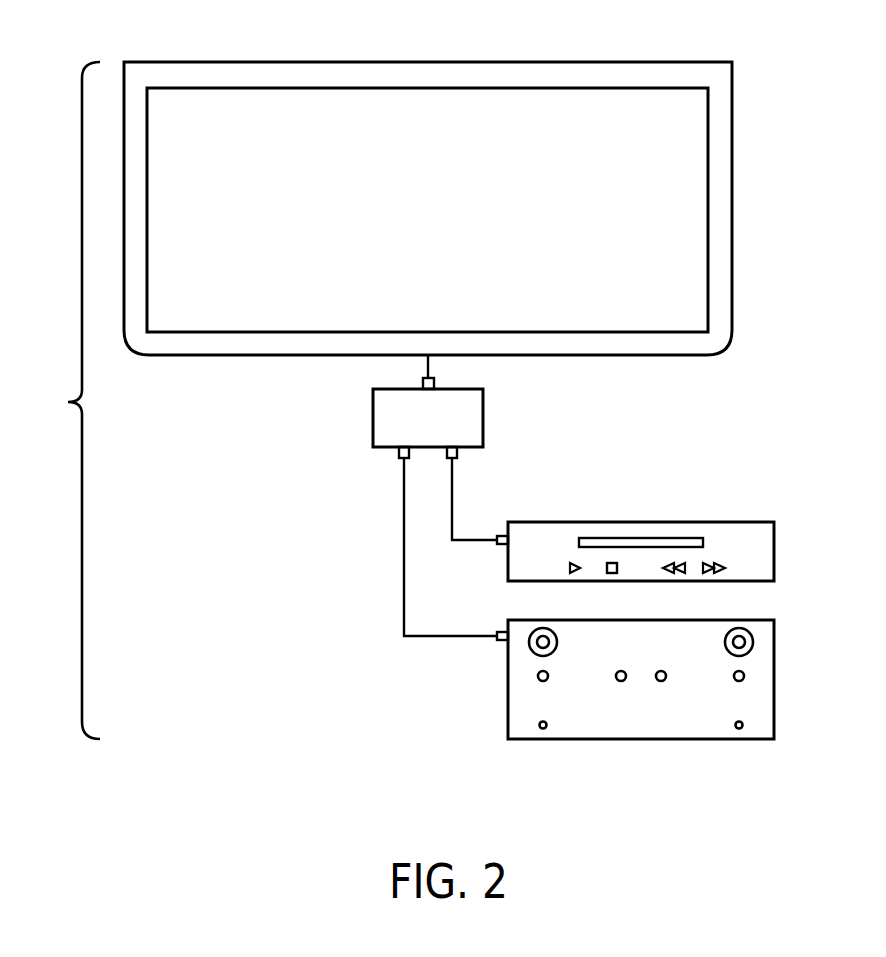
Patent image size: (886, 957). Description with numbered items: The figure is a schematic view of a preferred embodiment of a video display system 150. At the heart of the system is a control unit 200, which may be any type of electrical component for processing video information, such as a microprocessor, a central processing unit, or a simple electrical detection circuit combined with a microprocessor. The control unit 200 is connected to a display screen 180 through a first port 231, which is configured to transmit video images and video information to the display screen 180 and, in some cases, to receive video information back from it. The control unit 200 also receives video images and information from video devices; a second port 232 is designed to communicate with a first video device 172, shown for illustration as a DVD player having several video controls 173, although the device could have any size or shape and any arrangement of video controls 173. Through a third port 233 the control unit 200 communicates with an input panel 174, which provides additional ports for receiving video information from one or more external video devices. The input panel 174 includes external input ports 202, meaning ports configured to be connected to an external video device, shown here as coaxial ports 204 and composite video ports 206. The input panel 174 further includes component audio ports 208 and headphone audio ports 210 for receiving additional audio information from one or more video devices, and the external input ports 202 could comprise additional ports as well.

The video display system 150 is at (57, 400).
The display screen 180 is at (520, 88).
The control unit 200 is at (373, 417).
The first port 231 is at (434, 381).
The second port 232 is at (457, 452).
The third port 233 is at (399, 452).
The first video device 172 is at (667, 522).
The video controls 173 is at (571, 566).
The input panel 174 is at (700, 740).
The external input ports 202 is at (748, 668).
The coaxial ports 204 is at (528, 647).
The composite video ports 206 is at (555, 682).
The component audio ports 208 is at (668, 668).
The headphone audio ports 210 is at (553, 725).